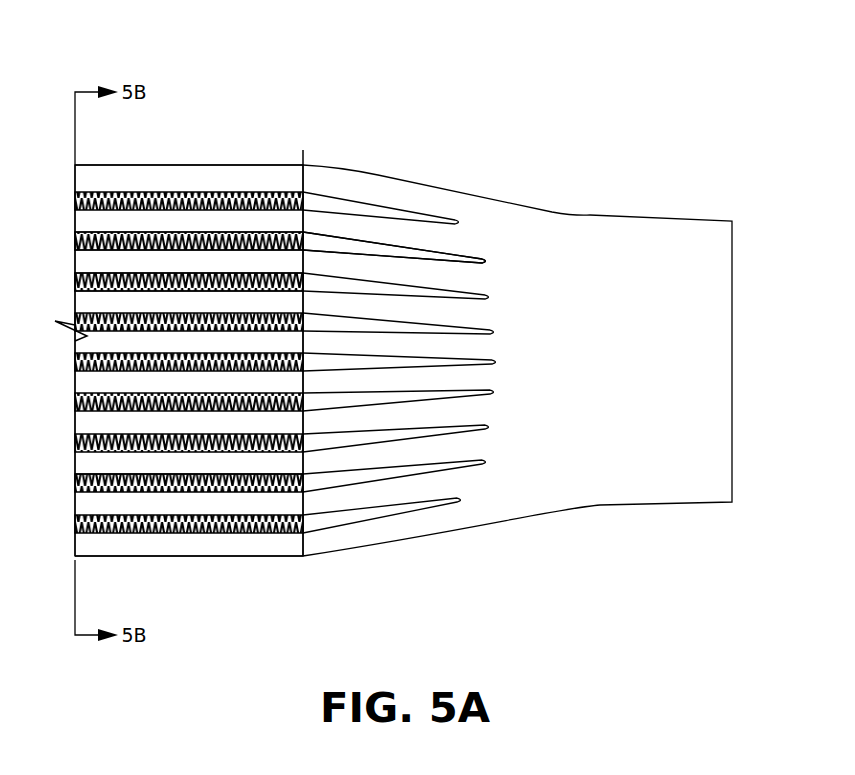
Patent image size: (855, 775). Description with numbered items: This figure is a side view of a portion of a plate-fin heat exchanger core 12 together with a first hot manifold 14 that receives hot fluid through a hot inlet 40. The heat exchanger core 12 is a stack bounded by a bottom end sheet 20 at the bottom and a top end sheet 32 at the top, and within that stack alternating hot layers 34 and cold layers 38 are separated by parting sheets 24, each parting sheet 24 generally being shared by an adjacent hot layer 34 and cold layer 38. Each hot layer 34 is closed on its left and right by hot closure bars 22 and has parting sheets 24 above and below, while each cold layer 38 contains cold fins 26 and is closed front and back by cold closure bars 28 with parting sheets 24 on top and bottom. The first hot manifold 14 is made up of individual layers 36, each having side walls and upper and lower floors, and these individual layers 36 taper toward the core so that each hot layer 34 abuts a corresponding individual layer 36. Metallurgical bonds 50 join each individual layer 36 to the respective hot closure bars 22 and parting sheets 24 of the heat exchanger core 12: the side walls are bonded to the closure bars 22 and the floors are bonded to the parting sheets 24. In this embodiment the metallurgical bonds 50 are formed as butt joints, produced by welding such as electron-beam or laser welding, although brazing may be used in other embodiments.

The heat exchanger core 12 is at (215, 72).
The first hot manifold 14 is at (588, 215).
The bottom end sheet 20 is at (210, 557).
The hot closure bars 22 is at (174, 544).
The parting sheets 24 is at (75, 192).
The cold fins 26 is at (75, 483).
The cold closure bars 28 is at (303, 240).
The top end sheet 32 is at (112, 165).
The hot layers 34 is at (217, 257).
The individual layers 36 is at (355, 265).
The cold layers 38 is at (100, 278).
The hot inlet 40 is at (757, 273).
The metallurgical bonds 50 is at (303, 150).